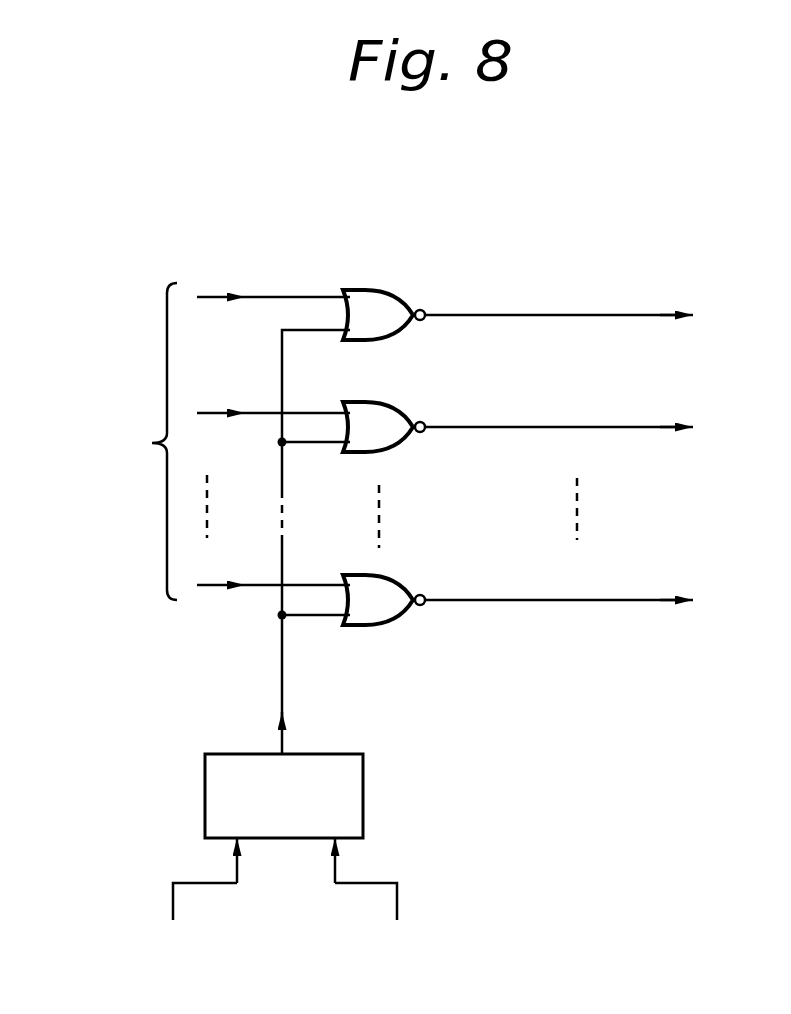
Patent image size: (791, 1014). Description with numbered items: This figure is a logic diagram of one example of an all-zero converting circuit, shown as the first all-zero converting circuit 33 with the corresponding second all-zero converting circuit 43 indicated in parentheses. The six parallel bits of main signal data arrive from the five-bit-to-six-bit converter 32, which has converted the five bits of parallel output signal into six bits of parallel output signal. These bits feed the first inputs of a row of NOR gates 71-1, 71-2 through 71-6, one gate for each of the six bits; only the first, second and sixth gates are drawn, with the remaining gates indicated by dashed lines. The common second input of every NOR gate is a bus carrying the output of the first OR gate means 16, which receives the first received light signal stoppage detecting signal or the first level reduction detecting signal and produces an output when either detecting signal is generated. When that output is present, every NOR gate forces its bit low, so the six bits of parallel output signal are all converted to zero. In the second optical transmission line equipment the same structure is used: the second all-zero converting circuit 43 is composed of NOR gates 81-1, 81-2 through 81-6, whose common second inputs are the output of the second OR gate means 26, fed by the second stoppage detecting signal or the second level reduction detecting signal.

The first all "0" converting circuit 33 is at (490, 189).
The second all "0" converting circuit 43 is at (370, 579).
The 5B/6B converter 32 is at (112, 441).
The NOR gate 71-1 is at (383, 287).
The NOR gate 71-2 is at (395, 403).
The NOR gate 71-6 is at (397, 627).
The NOR gate 81-1 is at (518, 290).
The NOR gate 81-2 is at (518, 411).
The NOR gate 81-6 is at (518, 620).
The first OR gate means 16 is at (363, 797).
The second OR gate means 26 is at (357, 796).